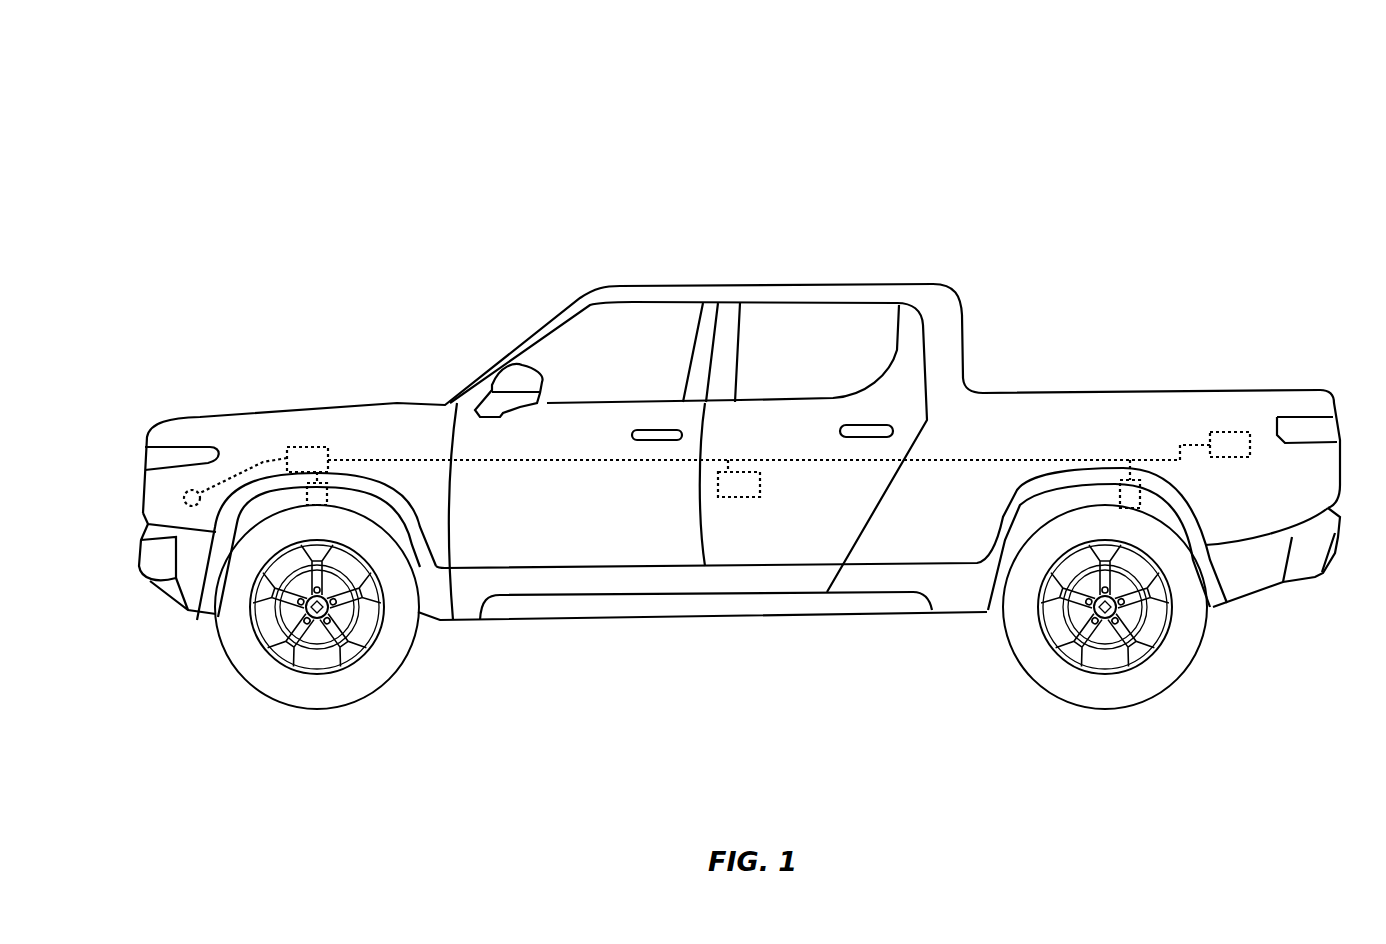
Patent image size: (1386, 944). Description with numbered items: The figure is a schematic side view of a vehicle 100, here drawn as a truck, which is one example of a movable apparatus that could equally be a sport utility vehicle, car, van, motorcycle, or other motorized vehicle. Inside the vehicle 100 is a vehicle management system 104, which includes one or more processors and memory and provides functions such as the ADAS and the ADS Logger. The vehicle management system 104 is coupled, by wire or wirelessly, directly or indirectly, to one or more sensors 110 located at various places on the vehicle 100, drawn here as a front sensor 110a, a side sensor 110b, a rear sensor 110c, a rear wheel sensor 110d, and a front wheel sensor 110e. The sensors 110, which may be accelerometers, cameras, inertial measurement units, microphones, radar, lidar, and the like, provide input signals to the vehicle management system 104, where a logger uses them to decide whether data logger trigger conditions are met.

The vehicle 100 is at (297, 163).
The vehicle management system 104 is at (312, 447).
The sensors 110 is at (735, 500).
The front sensor 110a is at (192, 490).
The side sensor 110b is at (750, 497).
The rear sensor 110c is at (1220, 432).
The rear wheel sensor 110d is at (1140, 495).
The front wheel sensor 110e is at (307, 494).